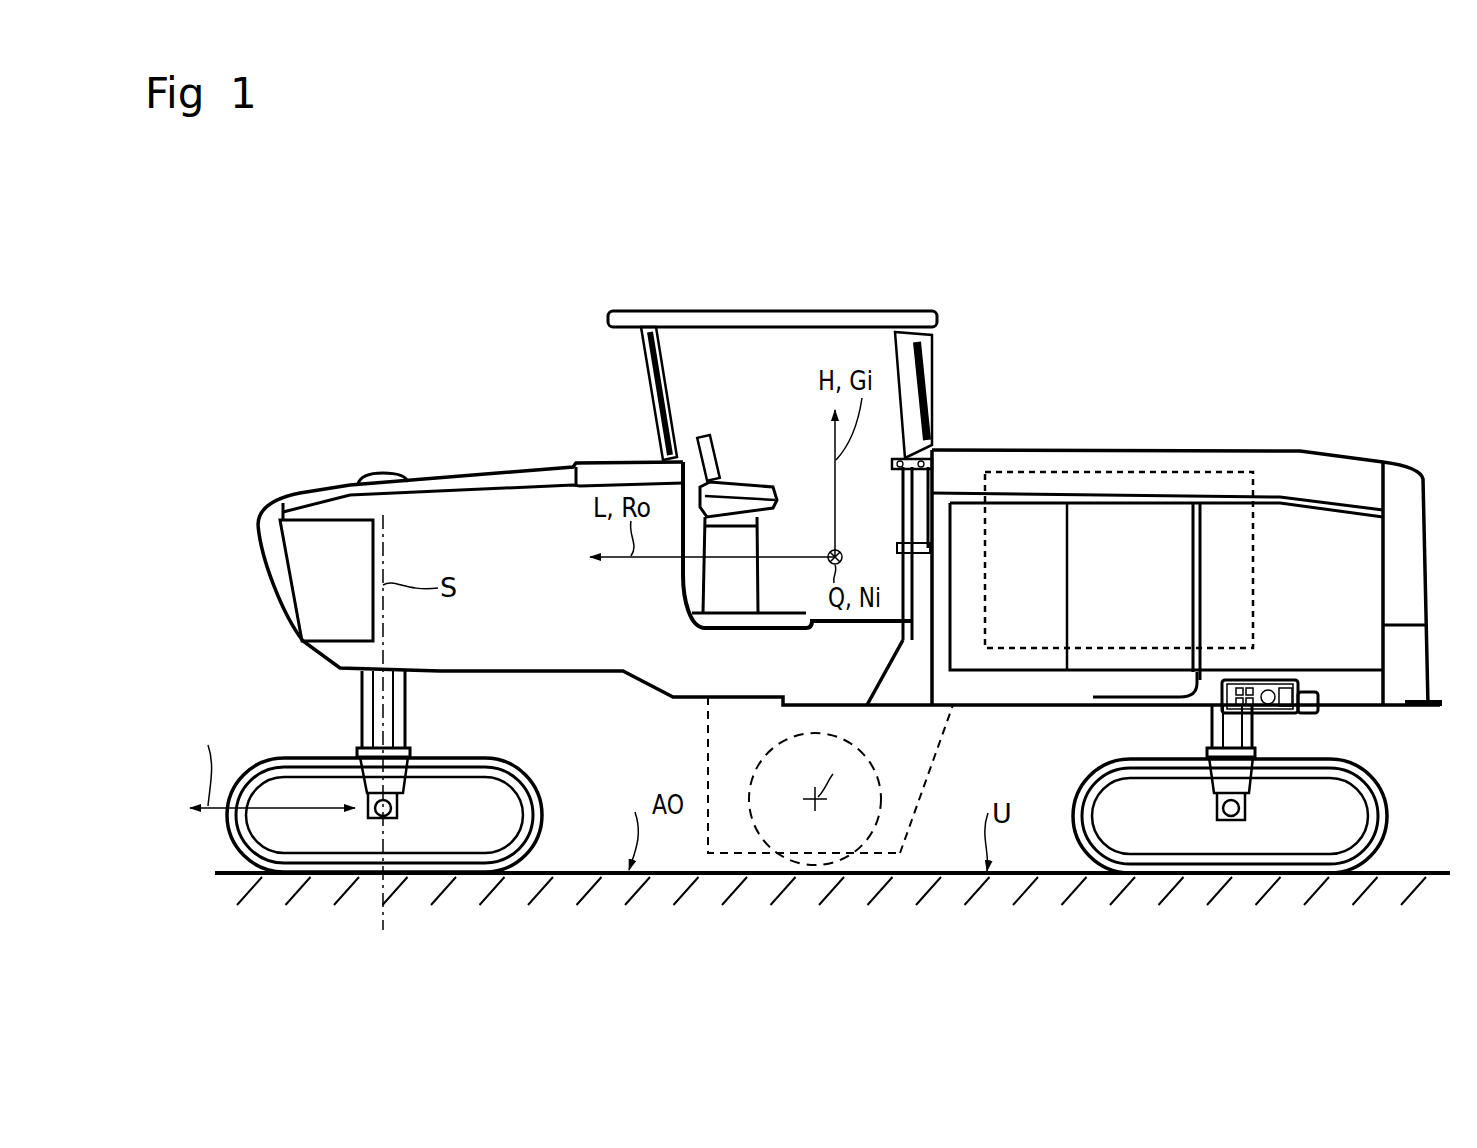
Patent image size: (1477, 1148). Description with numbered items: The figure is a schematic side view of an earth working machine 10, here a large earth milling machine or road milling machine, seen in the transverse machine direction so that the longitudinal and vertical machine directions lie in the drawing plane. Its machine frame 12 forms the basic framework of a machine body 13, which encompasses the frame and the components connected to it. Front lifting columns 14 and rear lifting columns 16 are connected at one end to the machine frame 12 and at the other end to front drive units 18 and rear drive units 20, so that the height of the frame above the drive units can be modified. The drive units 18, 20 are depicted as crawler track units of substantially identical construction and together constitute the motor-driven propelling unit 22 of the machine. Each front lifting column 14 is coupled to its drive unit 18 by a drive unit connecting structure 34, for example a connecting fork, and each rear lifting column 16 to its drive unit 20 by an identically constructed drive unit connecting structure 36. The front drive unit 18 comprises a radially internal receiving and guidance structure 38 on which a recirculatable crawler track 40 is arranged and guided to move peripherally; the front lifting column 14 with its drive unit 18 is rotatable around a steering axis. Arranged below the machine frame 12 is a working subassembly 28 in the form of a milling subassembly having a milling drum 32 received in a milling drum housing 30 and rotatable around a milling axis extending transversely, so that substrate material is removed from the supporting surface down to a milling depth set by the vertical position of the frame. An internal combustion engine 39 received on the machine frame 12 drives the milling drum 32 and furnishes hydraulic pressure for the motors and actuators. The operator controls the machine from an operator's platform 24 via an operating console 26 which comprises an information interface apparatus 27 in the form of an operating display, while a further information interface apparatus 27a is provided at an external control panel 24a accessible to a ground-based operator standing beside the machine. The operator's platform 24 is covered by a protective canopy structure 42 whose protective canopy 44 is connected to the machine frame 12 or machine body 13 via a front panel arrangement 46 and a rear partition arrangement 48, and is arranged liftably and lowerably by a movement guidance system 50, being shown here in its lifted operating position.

The earth working machine 10 is at (1229, 272).
The machine frame 12 is at (850, 533).
The machine body 13 is at (1278, 470).
The front lifting columns 14 is at (396, 722).
The rear lifting columns 16 is at (1243, 736).
The front drive units 18 is at (259, 766).
The rear drive units 20 is at (1368, 777).
The propelling unit 22 is at (152, 760).
The operator's platform 24 is at (803, 330).
The external control panel 24a is at (1298, 642).
The operating console 26 is at (738, 480).
The information interface apparatus 27 is at (701, 434).
The further information interface apparatus 27a is at (1271, 682).
The working subassembly 28 is at (815, 781).
The milling drum housing 30 is at (930, 775).
The milling drum 32 is at (834, 733).
The drive unit connecting structure 34 is at (368, 760).
The drive unit connecting structure 36 is at (1222, 762).
The receiving and guidance structure 38 is at (487, 833).
The internal combustion engine 39 is at (1113, 470).
The crawler track 40 is at (520, 768).
The protective canopy structure 42 is at (594, 258).
The protective canopy 44 is at (712, 308).
The front panel arrangement 46 is at (630, 400).
The rear partition arrangement 48 is at (962, 392).
The movement guidance system 50 is at (878, 360).